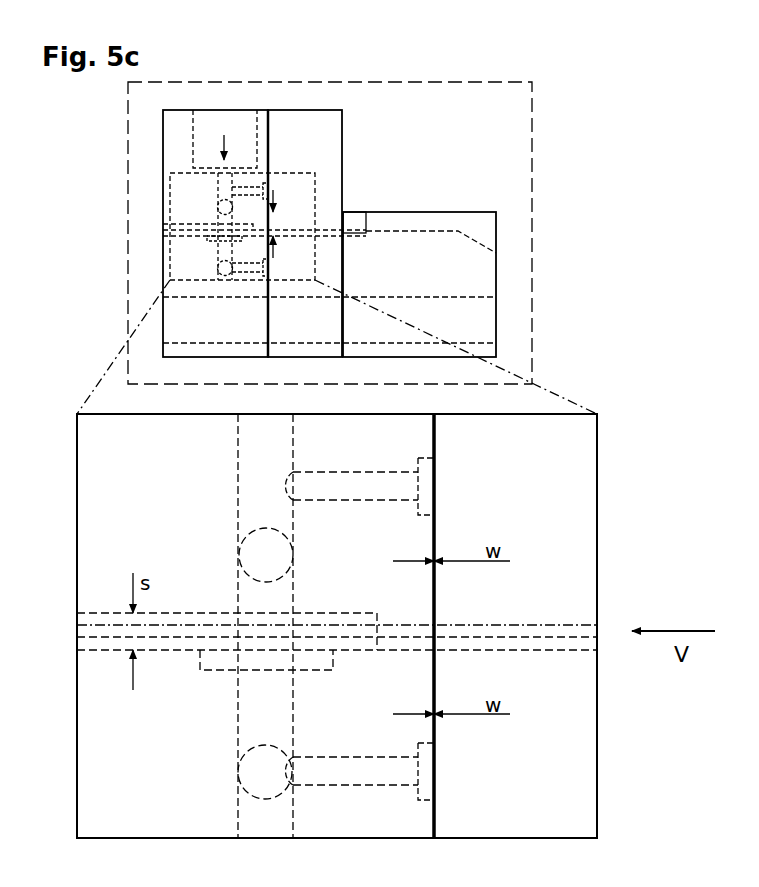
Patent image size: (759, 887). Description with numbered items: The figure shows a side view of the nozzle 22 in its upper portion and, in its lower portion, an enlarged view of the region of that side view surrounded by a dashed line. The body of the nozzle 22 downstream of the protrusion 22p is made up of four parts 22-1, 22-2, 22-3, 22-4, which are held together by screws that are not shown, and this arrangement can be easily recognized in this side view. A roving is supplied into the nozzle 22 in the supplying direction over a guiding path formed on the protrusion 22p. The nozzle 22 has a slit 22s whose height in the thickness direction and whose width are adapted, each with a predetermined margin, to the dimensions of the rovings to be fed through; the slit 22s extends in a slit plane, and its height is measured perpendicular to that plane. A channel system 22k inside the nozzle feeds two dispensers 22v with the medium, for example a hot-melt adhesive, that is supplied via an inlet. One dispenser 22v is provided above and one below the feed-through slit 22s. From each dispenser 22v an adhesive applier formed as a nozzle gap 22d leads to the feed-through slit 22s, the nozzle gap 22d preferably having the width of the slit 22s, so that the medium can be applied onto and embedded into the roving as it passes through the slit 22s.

The nozzle 22 is at (170, 780).
The first part of the nozzle body 22-1 is at (178, 118).
The second part of the nozzle body 22-2 is at (246, 332).
The third part of the nozzle body 22-3 is at (333, 154).
The fourth part of the nozzle body 22-4 is at (329, 332).
The protrusion 22p is at (433, 282).
The slit 22s is at (293, 228).
The channel system 22k is at (222, 204).
The dispenser 22v is at (428, 458).
The nozzle gap 22d is at (434, 532).